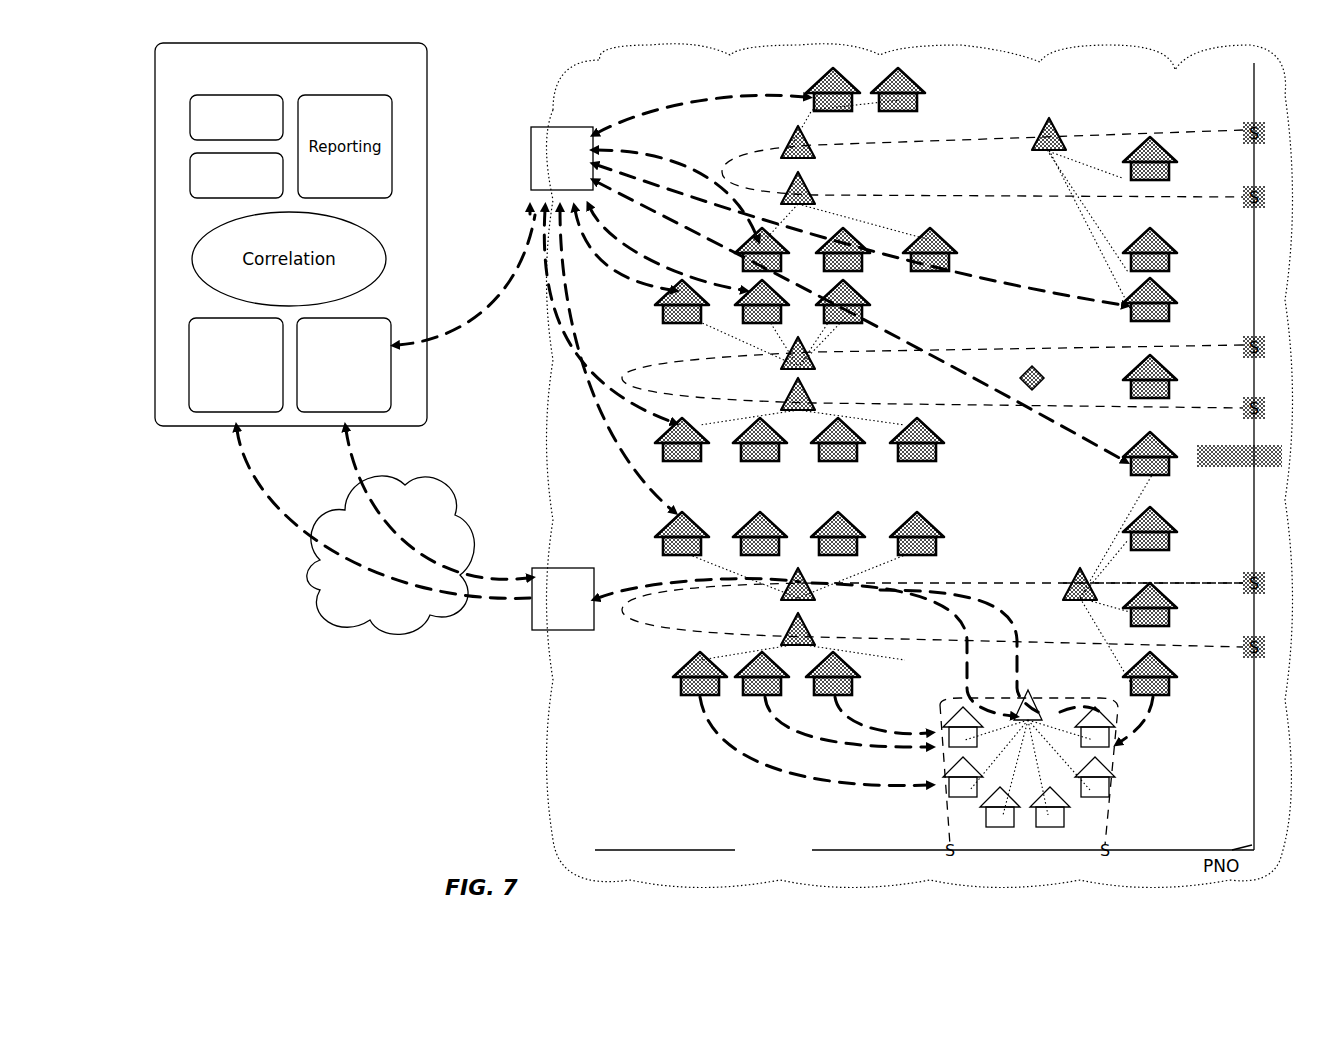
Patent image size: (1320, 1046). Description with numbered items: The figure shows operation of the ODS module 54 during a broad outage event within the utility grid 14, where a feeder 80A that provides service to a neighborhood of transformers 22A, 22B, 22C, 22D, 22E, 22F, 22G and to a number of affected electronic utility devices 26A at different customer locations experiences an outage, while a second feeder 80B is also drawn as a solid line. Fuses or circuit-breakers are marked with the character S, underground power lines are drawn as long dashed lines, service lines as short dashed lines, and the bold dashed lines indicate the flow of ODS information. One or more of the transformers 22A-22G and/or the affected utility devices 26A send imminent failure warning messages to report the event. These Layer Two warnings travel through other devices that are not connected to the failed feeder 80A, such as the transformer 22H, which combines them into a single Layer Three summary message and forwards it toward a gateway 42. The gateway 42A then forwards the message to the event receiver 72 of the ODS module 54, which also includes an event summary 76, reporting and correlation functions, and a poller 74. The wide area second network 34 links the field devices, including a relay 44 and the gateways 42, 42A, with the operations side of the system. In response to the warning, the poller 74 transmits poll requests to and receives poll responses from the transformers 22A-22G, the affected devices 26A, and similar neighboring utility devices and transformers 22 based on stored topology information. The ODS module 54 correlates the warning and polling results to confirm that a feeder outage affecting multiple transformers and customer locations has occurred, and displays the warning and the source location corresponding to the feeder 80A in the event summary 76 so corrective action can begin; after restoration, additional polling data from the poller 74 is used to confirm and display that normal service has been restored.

The utility grid 14 is at (958, 64).
The transformer 22 is at (1040, 130).
The transformer 22A is at (792, 132).
The transformer 22B is at (793, 185).
The transformer 22C is at (782, 360).
The transformer 22D is at (806, 395).
The transformer 22E is at (1072, 572).
The transformer 22F is at (784, 594).
The transformer 22G is at (808, 633).
The transformer 22H is at (1036, 697).
The affected electronic utility device 26A is at (933, 378).
The second network 34 is at (450, 503).
The gateway 42 is at (563, 573).
The gateway 42A is at (566, 128).
The relay 44 is at (1057, 372).
The ODS module 54 is at (428, 143).
The event receiver 72 is at (200, 318).
The poller 74 is at (370, 318).
The event summary 76 is at (243, 93).
The feeder 80A is at (1225, 446).
The feeder 80B is at (731, 838).